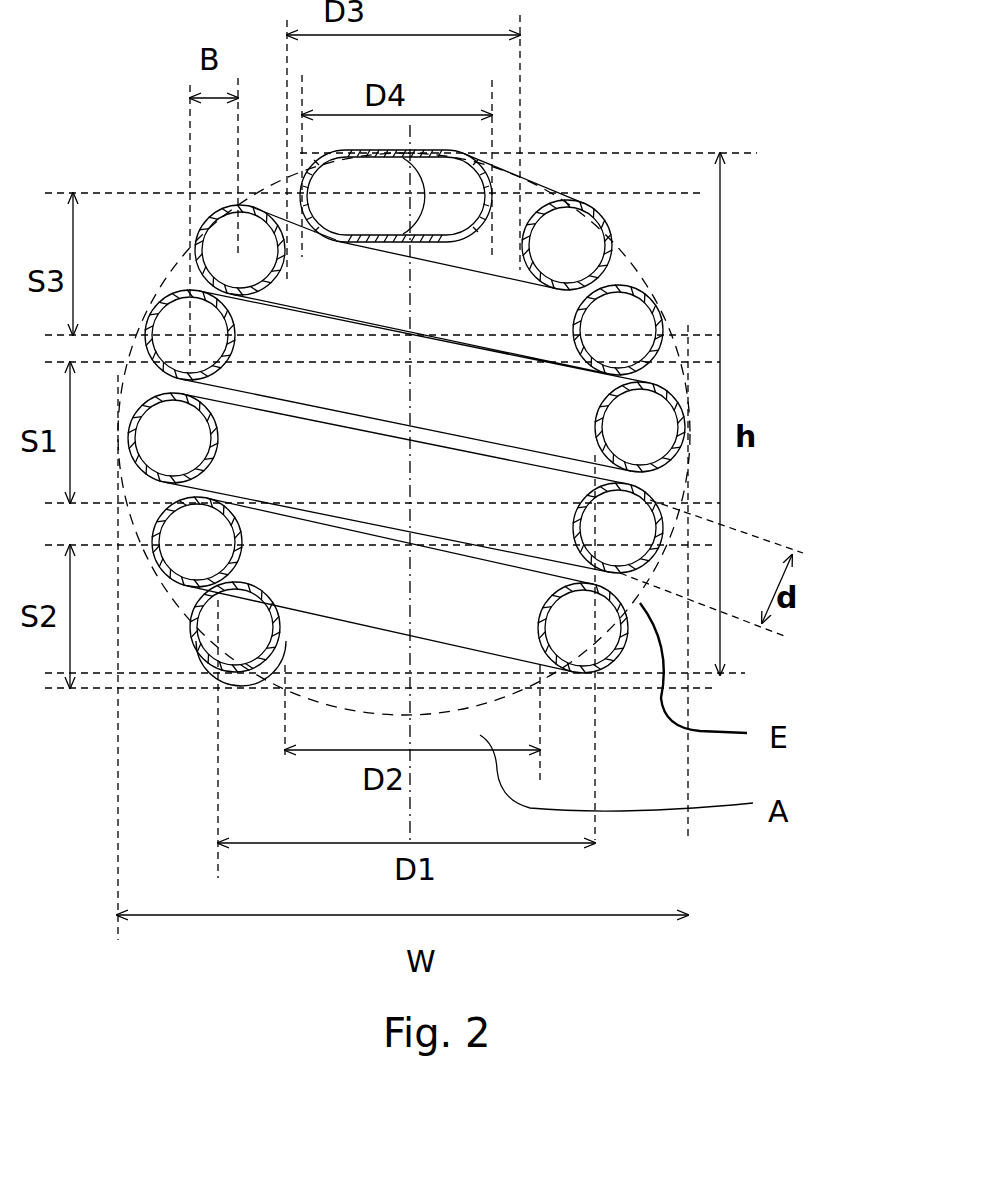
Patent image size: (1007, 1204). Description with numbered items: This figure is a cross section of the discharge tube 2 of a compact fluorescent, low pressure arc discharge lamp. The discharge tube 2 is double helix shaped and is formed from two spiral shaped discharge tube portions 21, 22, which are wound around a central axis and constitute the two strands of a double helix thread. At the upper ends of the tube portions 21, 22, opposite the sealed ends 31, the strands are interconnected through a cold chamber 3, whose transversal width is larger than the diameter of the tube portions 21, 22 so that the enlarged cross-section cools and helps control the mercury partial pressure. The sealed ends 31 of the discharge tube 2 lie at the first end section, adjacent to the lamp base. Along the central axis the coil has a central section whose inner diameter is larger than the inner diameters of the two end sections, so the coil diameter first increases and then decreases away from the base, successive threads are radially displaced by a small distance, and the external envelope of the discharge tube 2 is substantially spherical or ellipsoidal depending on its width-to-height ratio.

The discharge tube 2 is at (630, 133).
The cold chamber 3 is at (457, 153).
The spiral shaped discharge tube portion 21 is at (657, 303).
The spiral shaped discharge tube portion 22 is at (683, 403).
The ends of the discharge tube 31 is at (215, 670).